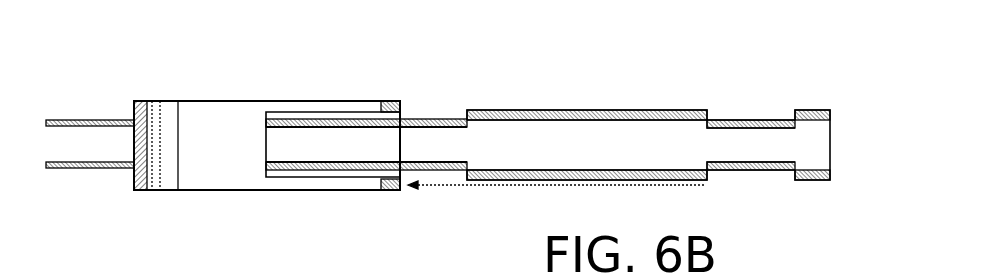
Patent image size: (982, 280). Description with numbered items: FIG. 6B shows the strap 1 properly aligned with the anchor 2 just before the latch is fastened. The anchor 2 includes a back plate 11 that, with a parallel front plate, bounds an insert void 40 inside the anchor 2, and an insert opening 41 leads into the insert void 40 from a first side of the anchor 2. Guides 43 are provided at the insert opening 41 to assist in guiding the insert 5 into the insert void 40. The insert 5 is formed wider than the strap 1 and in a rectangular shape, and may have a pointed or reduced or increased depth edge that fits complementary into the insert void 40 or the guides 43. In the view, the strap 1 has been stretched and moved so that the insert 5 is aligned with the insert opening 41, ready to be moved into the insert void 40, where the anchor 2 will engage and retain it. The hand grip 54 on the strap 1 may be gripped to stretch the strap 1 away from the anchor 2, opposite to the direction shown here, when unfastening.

The strap 1 is at (70, 121).
The anchor 2 is at (168, 101).
The back plate 11 is at (218, 158).
The guides 43 is at (311, 101).
The insert opening 41 is at (398, 117).
The insert void 40 is at (268, 173).
The insert 5 is at (575, 110).
The hand grip 54 is at (805, 112).